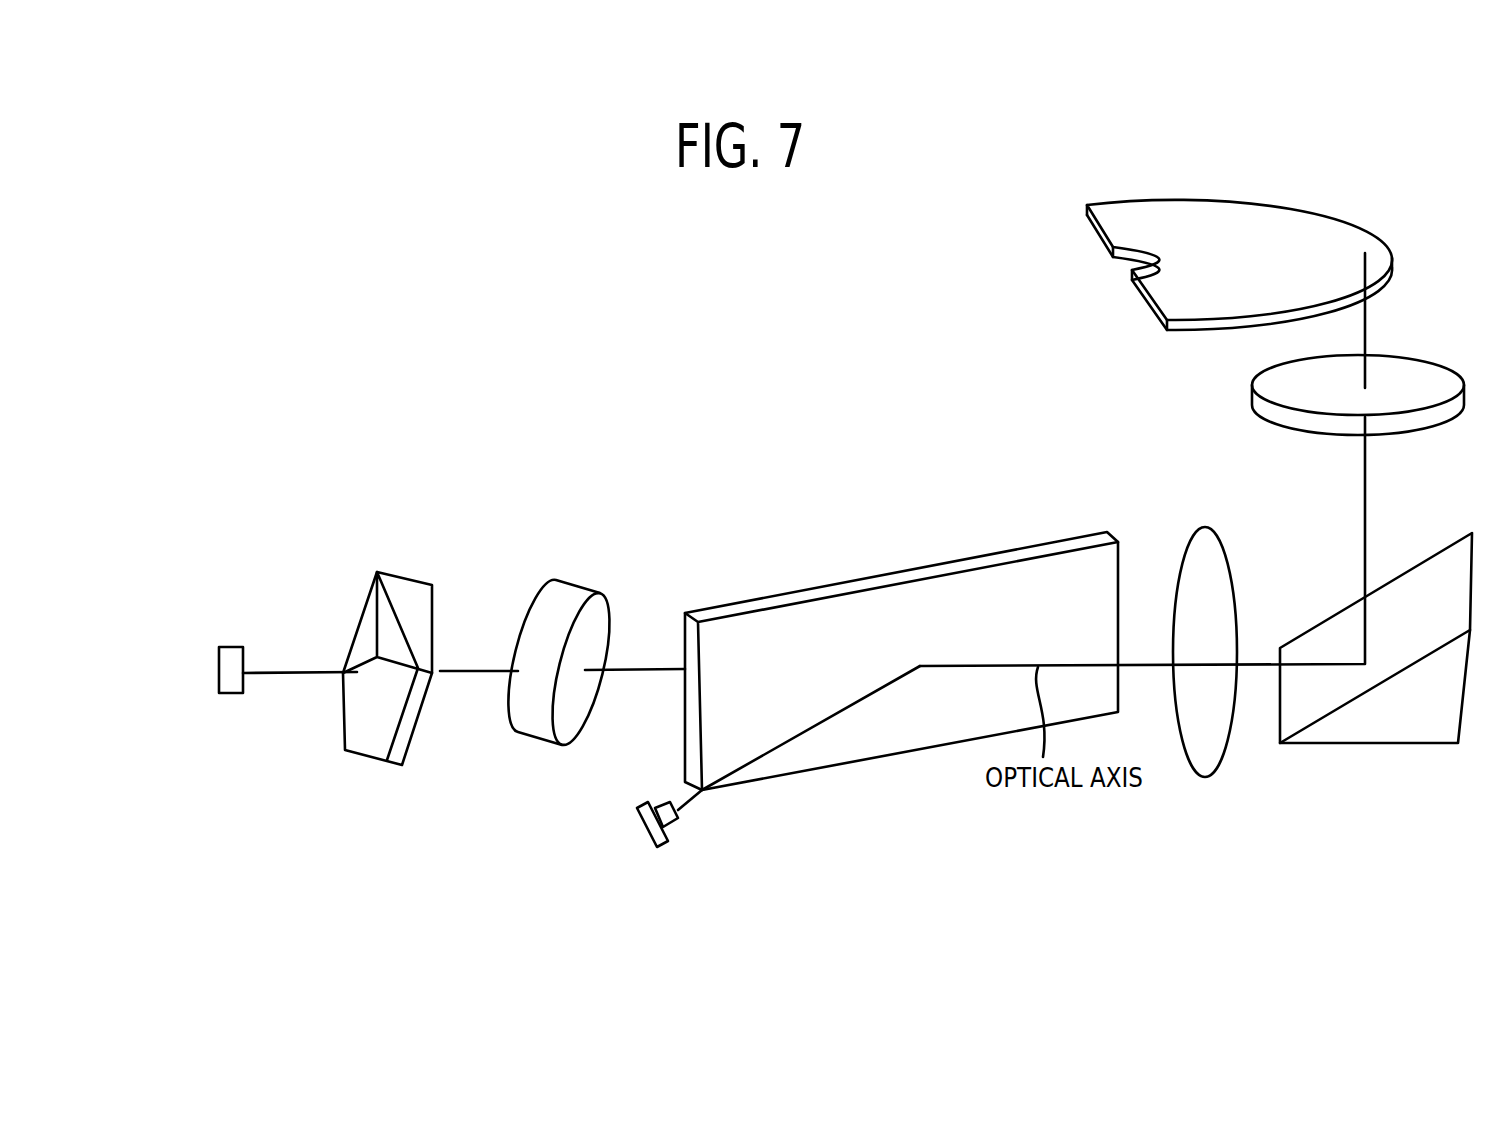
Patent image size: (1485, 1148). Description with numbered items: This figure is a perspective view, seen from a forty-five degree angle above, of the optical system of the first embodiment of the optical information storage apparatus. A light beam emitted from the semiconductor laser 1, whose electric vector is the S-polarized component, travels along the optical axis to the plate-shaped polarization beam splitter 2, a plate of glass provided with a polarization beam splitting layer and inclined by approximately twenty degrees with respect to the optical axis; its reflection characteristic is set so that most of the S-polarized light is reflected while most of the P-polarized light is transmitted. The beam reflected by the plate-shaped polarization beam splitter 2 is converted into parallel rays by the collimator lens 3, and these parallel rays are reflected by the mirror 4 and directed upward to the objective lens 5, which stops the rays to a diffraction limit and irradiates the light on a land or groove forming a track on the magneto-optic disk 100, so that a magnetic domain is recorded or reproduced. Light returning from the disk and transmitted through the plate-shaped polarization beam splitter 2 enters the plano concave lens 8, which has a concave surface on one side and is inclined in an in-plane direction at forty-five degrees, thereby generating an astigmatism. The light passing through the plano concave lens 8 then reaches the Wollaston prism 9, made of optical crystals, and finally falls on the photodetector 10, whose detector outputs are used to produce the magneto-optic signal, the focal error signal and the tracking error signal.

The semiconductor laser 1 is at (657, 848).
The plate-shaped polarization beam splitter 2 is at (908, 710).
The collimator lens 3 is at (1213, 738).
The mirror 4 is at (1435, 730).
The objective lens 5 is at (1257, 407).
The plano concave lens 8 is at (570, 613).
The Wollaston prism 9 is at (417, 600).
The photodetector 10 is at (235, 655).
The magneto-optic disk 100 is at (1235, 207).